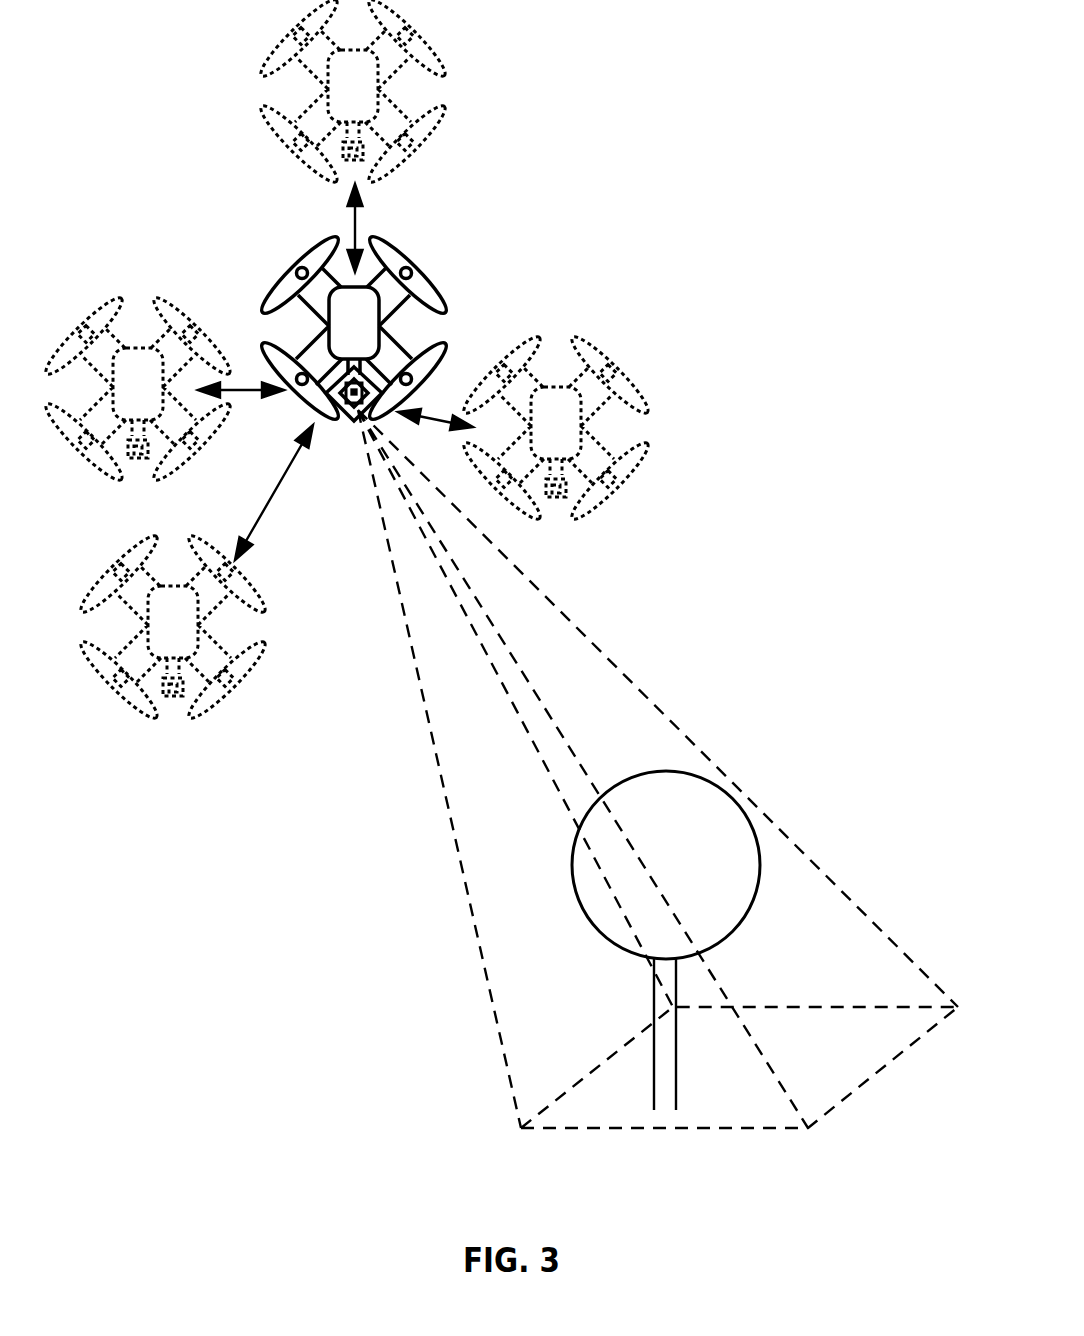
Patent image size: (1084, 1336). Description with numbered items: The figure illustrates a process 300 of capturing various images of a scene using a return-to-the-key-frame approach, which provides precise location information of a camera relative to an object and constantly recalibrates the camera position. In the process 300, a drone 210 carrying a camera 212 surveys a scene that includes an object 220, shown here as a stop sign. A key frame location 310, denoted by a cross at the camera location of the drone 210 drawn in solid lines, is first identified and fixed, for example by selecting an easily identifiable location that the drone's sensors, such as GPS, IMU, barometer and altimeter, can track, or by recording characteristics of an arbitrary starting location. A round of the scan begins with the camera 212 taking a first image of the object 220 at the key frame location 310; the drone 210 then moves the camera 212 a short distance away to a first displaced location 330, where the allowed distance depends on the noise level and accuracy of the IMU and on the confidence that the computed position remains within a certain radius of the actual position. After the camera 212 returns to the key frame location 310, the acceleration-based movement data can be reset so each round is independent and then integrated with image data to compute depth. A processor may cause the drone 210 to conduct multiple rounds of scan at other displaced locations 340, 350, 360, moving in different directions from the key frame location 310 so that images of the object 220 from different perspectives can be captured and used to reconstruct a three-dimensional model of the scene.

The process 300 is at (167, 1097).
The drone 210 is at (298, 266).
The camera 212 is at (358, 416).
The key frame location 310 is at (370, 370).
The object 220 is at (655, 771).
The first displaced location 330 is at (653, 478).
The displaced location 340 is at (148, 728).
The displaced location 350 is at (235, 70).
The displaced location 360 is at (137, 287).